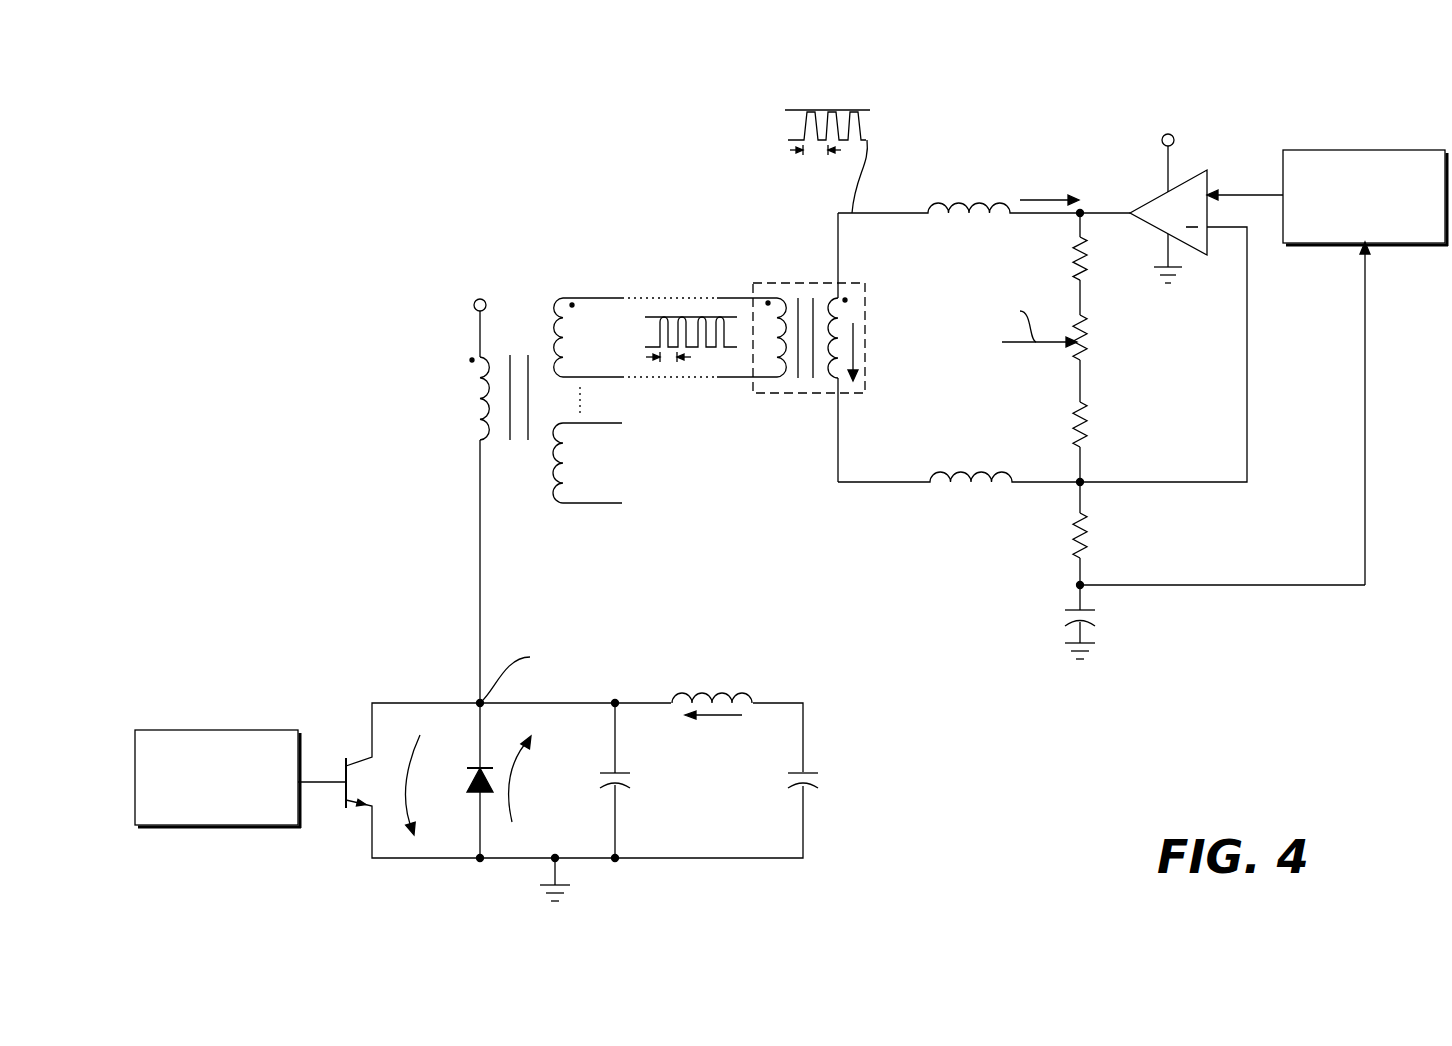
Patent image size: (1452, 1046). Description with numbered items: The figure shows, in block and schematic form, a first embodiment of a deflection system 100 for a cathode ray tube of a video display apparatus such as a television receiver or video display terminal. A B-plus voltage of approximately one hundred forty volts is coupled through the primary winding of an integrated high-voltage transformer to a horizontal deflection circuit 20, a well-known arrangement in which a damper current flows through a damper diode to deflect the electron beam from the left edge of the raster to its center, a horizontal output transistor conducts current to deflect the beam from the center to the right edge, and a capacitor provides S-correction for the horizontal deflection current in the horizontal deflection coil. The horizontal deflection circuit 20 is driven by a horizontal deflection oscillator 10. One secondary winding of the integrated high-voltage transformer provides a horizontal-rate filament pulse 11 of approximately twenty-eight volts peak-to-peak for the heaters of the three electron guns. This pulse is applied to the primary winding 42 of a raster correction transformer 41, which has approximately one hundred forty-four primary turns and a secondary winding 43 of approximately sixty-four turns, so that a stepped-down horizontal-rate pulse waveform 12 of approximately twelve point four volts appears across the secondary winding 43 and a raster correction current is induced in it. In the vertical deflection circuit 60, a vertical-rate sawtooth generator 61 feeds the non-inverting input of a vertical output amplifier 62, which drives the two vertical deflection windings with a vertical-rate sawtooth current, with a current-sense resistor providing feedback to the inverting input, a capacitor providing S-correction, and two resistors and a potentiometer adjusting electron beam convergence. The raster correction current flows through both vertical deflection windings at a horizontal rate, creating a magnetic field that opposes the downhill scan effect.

The horizontal deflection oscillator 10 is at (235, 730).
The horizontal-rate filament pulse 11 is at (672, 318).
The stepped-down horizontal-rate pulse waveform 12 is at (863, 127).
The horizontal deflection circuit 20 is at (435, 690).
The raster correction transformer 41 is at (788, 283).
The primary winding 42 is at (784, 380).
The secondary winding 43 is at (836, 383).
The vertical deflection circuit 60 is at (1054, 161).
The vertical-rate sawtooth generator 61 is at (1383, 150).
The vertical output amplifier 62 is at (1148, 202).
The deflection system 100 is at (1013, 89).